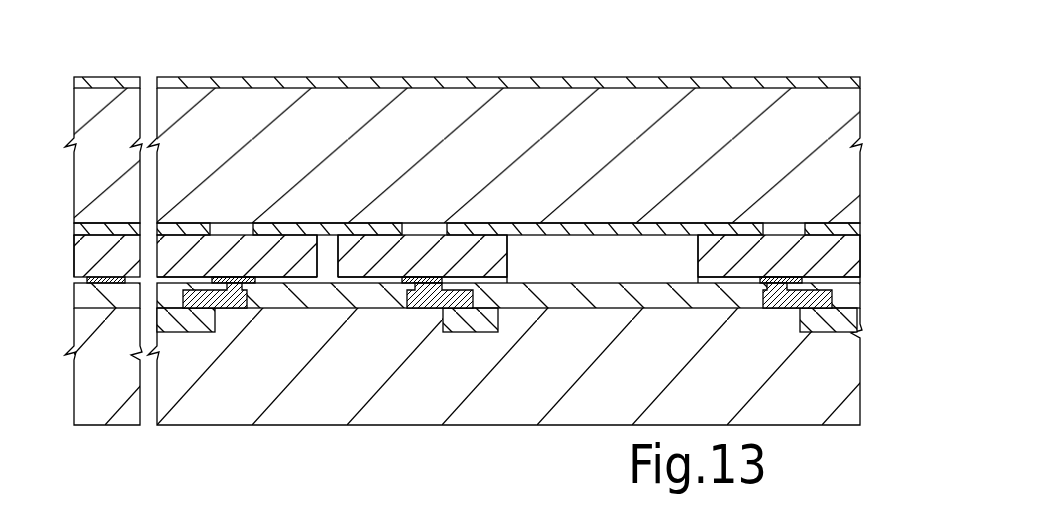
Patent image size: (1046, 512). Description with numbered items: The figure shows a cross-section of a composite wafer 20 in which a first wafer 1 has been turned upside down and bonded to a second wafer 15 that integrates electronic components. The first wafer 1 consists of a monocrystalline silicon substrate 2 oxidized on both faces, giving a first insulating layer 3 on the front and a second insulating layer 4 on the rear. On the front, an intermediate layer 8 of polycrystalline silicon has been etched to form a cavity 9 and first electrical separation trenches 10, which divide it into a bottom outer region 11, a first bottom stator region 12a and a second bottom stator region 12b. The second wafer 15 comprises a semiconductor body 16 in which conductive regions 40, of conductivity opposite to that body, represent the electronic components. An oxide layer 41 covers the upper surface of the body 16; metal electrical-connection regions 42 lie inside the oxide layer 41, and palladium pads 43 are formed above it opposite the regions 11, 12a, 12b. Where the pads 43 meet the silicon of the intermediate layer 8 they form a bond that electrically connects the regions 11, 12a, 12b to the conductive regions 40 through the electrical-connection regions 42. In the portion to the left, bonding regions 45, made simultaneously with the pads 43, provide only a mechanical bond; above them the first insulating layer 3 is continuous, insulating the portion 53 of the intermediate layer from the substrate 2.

The first wafer 1 is at (870, 151).
The substrate 2 is at (777, 163).
The first insulating layer 3 is at (103, 227).
The second insulating layer 4 is at (705, 82).
The intermediate layer 8 is at (866, 257).
The cavity 9 is at (594, 257).
The first electrical separation trenches 10 is at (324, 267).
The bottom outer region 11 is at (237, 247).
The first bottom stator region 12a is at (422, 242).
The second bottom stator region 12b is at (707, 257).
The second wafer 15 is at (866, 372).
The semiconductor body 16 is at (823, 408).
The composite wafer 20 is at (877, 224).
The conductive regions 40 is at (180, 324).
The oxide layer 41 is at (691, 297).
The electrical-connection regions 42 is at (242, 300).
The pads 43 is at (233, 281).
The bonding regions 45 is at (92, 285).
The portion of the intermediate layer 53 is at (86, 253).